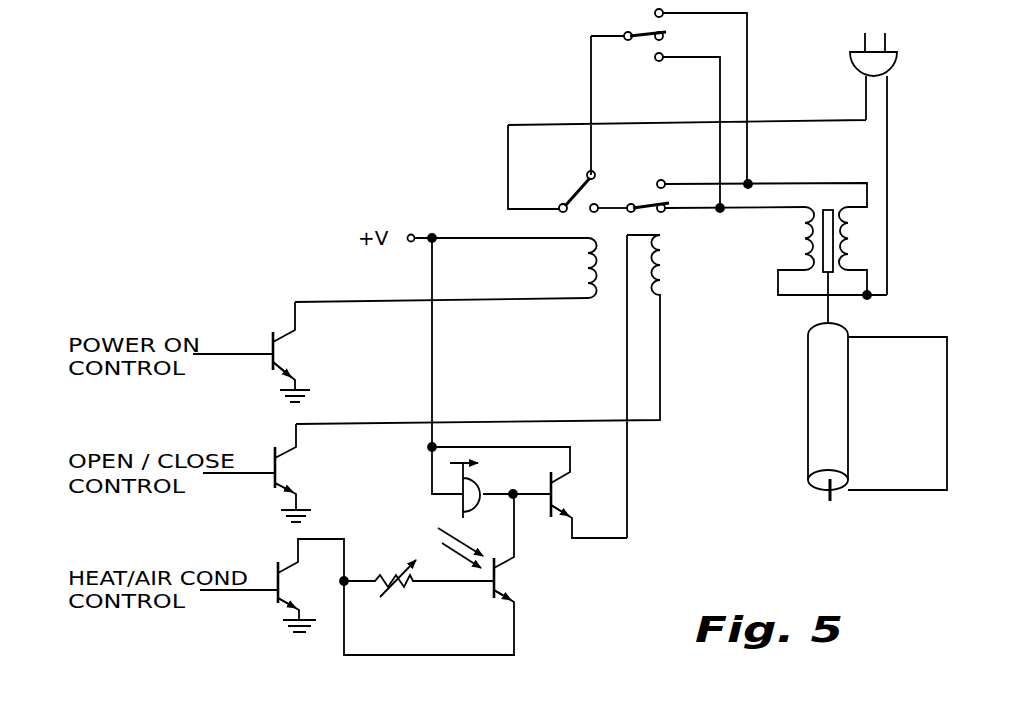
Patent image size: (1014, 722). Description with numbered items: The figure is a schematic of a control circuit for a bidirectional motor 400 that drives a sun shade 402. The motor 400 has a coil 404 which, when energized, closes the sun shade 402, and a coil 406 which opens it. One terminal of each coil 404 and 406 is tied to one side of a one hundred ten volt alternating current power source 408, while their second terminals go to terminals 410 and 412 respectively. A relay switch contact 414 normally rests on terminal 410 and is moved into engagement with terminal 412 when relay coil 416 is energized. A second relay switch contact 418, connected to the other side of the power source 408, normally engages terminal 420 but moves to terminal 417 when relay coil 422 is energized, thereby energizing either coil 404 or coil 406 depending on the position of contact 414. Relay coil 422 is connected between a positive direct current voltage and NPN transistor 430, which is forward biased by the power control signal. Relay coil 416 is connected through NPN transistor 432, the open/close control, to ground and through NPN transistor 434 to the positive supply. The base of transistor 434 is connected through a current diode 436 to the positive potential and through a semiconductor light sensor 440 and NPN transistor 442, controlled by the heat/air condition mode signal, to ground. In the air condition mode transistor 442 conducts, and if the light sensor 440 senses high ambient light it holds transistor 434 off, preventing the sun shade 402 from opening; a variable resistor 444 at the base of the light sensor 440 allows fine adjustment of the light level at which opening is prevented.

The bidirectional motor 400 is at (826, 231).
The sun shade 402 is at (893, 341).
The coil 404 is at (800, 254).
The coil 406 is at (890, 262).
The 110 volt A/C power source 408 is at (898, 62).
The terminal 410 is at (662, 213).
The terminal 412 is at (661, 179).
The relay switch contact 414 is at (655, 202).
The relay coil 416 is at (665, 298).
The terminal 417 is at (594, 216).
The relay switch contact 418 is at (575, 188).
The terminal 420 is at (588, 170).
The relay coil 422 is at (593, 298).
The NPN transistor 430 is at (301, 352).
The NPN transistor 432 is at (299, 473).
The NPN transistor 434 is at (554, 500).
The current diode 436 is at (481, 479).
The semiconductor light sensor 440 is at (516, 590).
The NPN transistor 442 is at (273, 600).
The variable resistor 444 is at (380, 574).